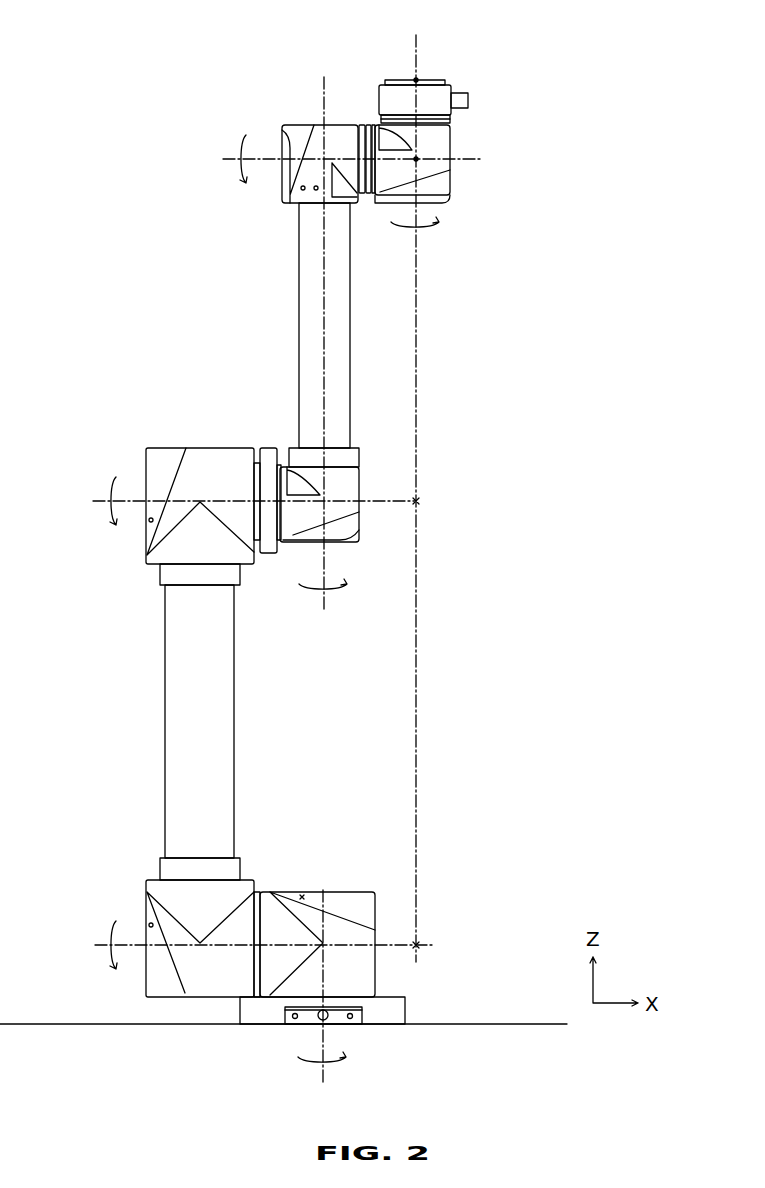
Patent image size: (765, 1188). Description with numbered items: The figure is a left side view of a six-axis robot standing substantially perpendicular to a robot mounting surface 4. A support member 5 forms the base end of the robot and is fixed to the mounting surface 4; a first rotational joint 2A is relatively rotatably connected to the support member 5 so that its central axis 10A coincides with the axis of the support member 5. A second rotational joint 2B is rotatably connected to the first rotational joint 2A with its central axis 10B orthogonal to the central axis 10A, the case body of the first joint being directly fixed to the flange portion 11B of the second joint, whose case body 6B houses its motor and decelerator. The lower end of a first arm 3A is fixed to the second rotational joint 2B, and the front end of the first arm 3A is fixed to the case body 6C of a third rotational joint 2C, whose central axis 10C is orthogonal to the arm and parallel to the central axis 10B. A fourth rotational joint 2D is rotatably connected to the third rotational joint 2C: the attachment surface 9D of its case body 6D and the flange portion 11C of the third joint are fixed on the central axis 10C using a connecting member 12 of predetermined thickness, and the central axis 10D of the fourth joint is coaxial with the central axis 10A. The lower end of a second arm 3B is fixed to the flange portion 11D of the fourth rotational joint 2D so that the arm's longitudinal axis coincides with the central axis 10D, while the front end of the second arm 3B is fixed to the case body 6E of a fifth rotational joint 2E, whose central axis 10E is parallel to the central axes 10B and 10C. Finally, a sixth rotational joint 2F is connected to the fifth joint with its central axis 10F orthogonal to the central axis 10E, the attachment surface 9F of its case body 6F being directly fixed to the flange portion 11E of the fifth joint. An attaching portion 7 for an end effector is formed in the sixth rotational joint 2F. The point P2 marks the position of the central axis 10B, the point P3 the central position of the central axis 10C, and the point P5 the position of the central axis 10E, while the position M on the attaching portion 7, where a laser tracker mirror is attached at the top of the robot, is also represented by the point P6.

The first rotational joint 2A is at (355, 892).
The second rotational joint 2B is at (146, 985).
The third rotational joint 2C is at (208, 448).
The fourth rotational joint 2D is at (361, 527).
The fifth rotational joint 2E is at (306, 125).
The sixth rotational joint 2F is at (452, 142).
The first arm 3A is at (165, 691).
The second arm 3B is at (352, 332).
The robot mounting surface 4 is at (478, 1024).
The support member 5 is at (395, 997).
The case body 6B is at (146, 889).
The case body 6C is at (160, 448).
The case body 6D is at (361, 482).
The case body 6E is at (318, 125).
The case body 6F is at (450, 190).
The attaching portion 7 is at (375, 125).
The attachment surface 9D is at (279, 465).
The attachment surface 9F is at (369, 125).
The central axis 10A is at (326, 1073).
The central axis 10B is at (99, 945).
The central axis 10C is at (100, 500).
The central axis 10D is at (326, 604).
The central axis 10E is at (228, 159).
The central axis 10F is at (418, 240).
The flange portion 11B is at (257, 892).
The flange portion 11C is at (256, 462).
The flange portion 11D is at (362, 463).
The flange portion 11E is at (361, 125).
The connecting member 12 is at (267, 448).
The position M is at (418, 80).
The point P2 is at (420, 942).
The point P3 is at (420, 499).
The point P5 is at (420, 157).
The point P6 is at (416, 80).